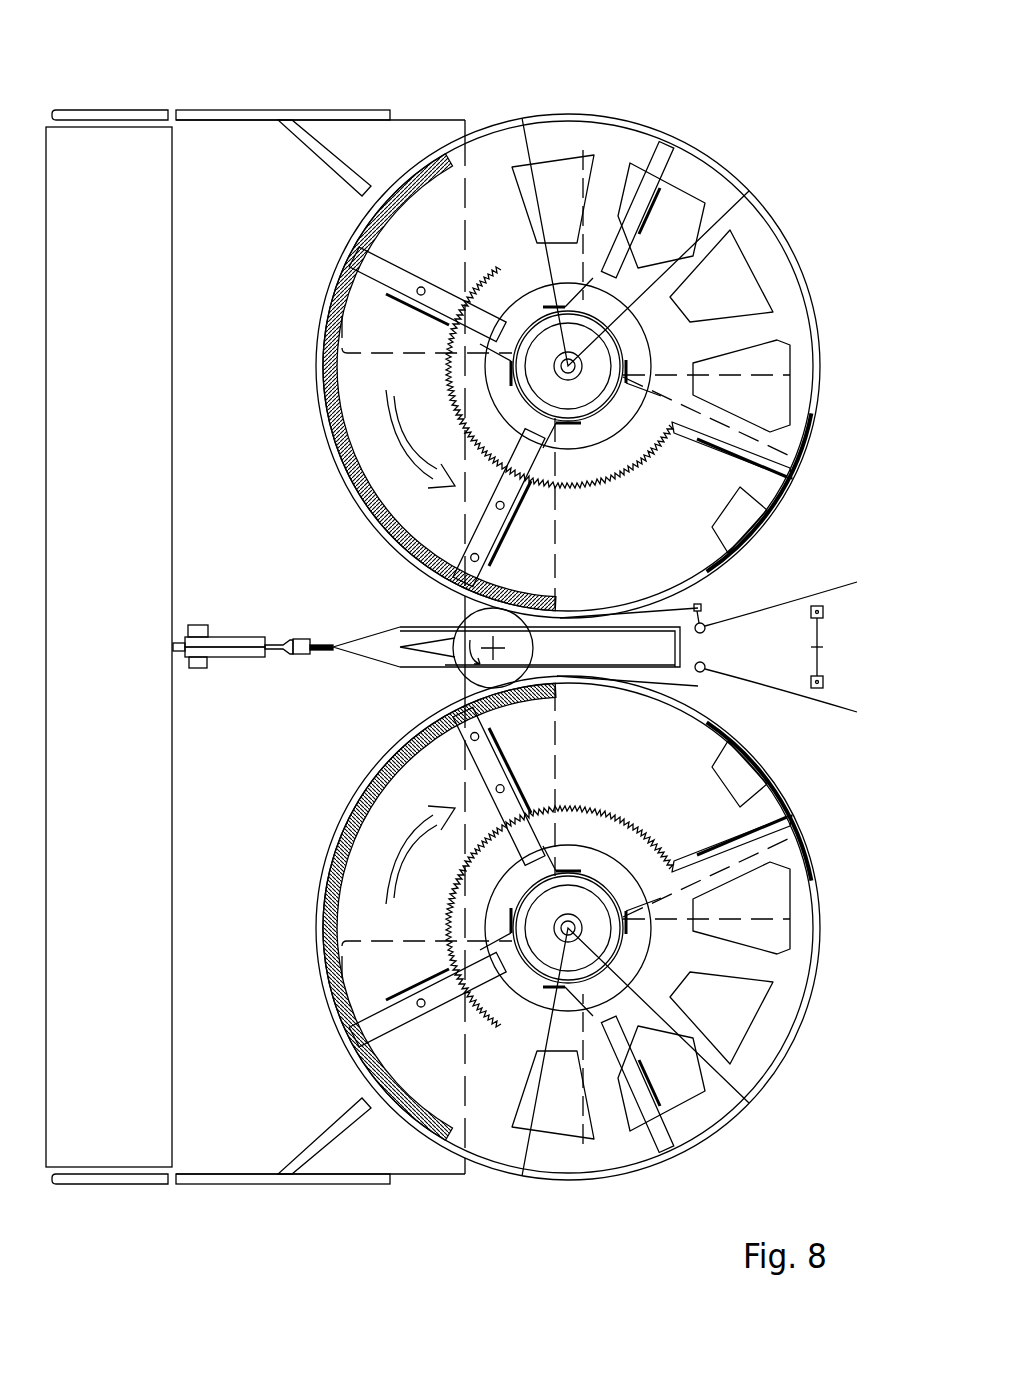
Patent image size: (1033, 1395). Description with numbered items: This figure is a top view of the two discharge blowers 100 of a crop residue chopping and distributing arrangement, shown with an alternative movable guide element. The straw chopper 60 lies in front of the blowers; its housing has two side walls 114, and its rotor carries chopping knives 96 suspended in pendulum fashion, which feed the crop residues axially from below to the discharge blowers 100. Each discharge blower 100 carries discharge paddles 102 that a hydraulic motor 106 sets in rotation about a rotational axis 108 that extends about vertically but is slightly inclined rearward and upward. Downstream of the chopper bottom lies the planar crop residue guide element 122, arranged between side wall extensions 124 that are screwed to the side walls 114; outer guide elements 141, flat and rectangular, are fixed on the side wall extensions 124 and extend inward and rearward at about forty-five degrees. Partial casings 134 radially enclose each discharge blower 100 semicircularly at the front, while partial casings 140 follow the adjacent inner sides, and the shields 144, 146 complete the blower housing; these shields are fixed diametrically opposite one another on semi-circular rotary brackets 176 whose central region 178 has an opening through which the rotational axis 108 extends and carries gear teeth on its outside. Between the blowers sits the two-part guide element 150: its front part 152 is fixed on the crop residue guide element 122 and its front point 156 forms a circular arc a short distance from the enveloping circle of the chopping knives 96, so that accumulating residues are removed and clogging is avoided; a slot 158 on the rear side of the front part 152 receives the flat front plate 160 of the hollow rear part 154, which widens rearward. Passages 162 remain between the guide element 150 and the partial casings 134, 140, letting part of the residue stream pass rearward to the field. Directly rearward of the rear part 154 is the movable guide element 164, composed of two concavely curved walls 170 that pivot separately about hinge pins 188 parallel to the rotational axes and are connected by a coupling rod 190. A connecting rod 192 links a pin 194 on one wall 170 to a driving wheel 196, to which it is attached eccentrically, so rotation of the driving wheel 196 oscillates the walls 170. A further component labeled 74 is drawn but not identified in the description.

The straw chopper 60 is at (185, 777).
The frame 74 is at (176, 488).
The chopping knives 96 is at (240, 637).
The discharge blowers 100 is at (815, 276).
The discharge paddles 102 is at (553, 775).
The hydraulic motor 106 is at (590, 340).
The rotational axis 108 is at (590, 350).
The side walls 114 is at (100, 115).
The crop residue guide element 122 is at (247, 309).
The side wall extensions 124 is at (222, 118).
The partial casings 134 is at (330, 380).
The partial casings 140 is at (725, 598).
The outer guide elements 141 is at (346, 172).
The shield 144 is at (493, 122).
The shield 146 is at (797, 472).
The guide element 150 is at (335, 662).
The front part 152 is at (302, 637).
The rear part 154 is at (422, 627).
The front point 156 is at (245, 657).
The slot 158 is at (300, 655).
The front plate 160 is at (318, 640).
The passages 162 is at (580, 625).
The movable guide element 164 is at (834, 652).
The walls 170 is at (819, 607).
The rotary brackets 176 is at (192, 640).
The central region 178 is at (199, 625).
The hinge pins 188 is at (706, 661).
The coupling rod 190 is at (820, 630).
The connecting rod 192 is at (684, 604).
The pin 194 is at (702, 611).
The driving wheel 196 is at (462, 675).